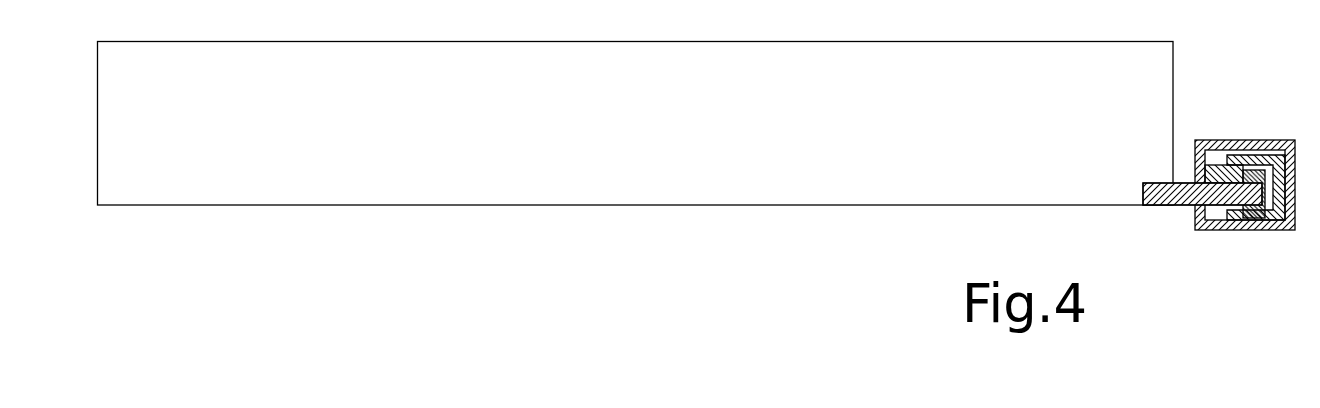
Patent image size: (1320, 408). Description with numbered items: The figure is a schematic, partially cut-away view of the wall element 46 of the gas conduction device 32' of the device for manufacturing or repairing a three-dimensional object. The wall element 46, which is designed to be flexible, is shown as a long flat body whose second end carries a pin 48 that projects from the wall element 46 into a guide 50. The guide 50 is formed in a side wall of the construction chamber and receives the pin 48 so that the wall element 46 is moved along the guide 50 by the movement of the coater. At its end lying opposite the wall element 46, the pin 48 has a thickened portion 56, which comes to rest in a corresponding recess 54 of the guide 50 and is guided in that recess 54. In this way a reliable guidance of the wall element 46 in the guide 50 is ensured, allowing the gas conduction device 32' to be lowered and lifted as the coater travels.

The wall element 46 is at (620, 140).
The guide 50 is at (1208, 141).
The recess 54 is at (1280, 145).
The thickened portion 56 is at (1255, 226).
The pin 48 is at (1183, 207).
The gas conduction device 32' is at (247, 269).